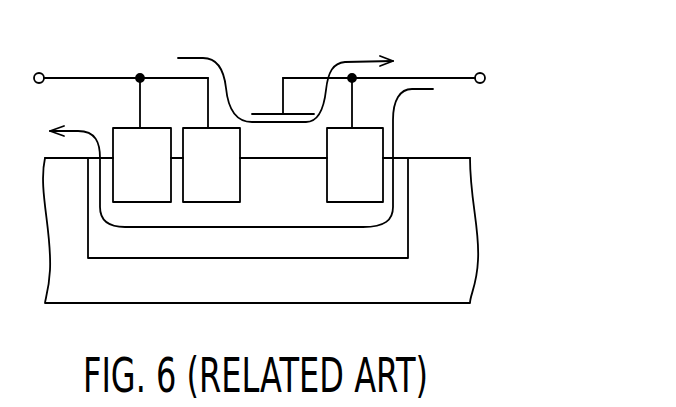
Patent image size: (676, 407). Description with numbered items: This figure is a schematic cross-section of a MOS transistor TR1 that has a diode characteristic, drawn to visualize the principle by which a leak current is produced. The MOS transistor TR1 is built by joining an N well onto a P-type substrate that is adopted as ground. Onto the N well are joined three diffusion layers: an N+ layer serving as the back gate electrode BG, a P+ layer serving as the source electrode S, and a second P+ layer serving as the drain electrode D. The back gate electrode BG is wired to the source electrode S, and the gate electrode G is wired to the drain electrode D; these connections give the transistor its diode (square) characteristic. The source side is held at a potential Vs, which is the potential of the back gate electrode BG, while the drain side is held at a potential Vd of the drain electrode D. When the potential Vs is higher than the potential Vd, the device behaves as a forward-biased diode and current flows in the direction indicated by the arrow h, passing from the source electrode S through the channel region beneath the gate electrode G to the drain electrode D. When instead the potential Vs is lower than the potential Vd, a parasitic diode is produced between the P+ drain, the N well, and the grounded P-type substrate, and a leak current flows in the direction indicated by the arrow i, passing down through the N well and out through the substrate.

The MOS transistor TR1 is at (644, 183).
The potential of the back gate electrode Vs is at (121, 68).
The potential of the drain electrode Vd is at (384, 66).
The back gate electrode BG is at (122, 103).
The source electrode S is at (196, 103).
The gate electrode G is at (283, 96).
The drain electrode D is at (342, 103).
The arrow indicating current direction h is at (355, 59).
The arrow indicating leak current direction i is at (78, 130).